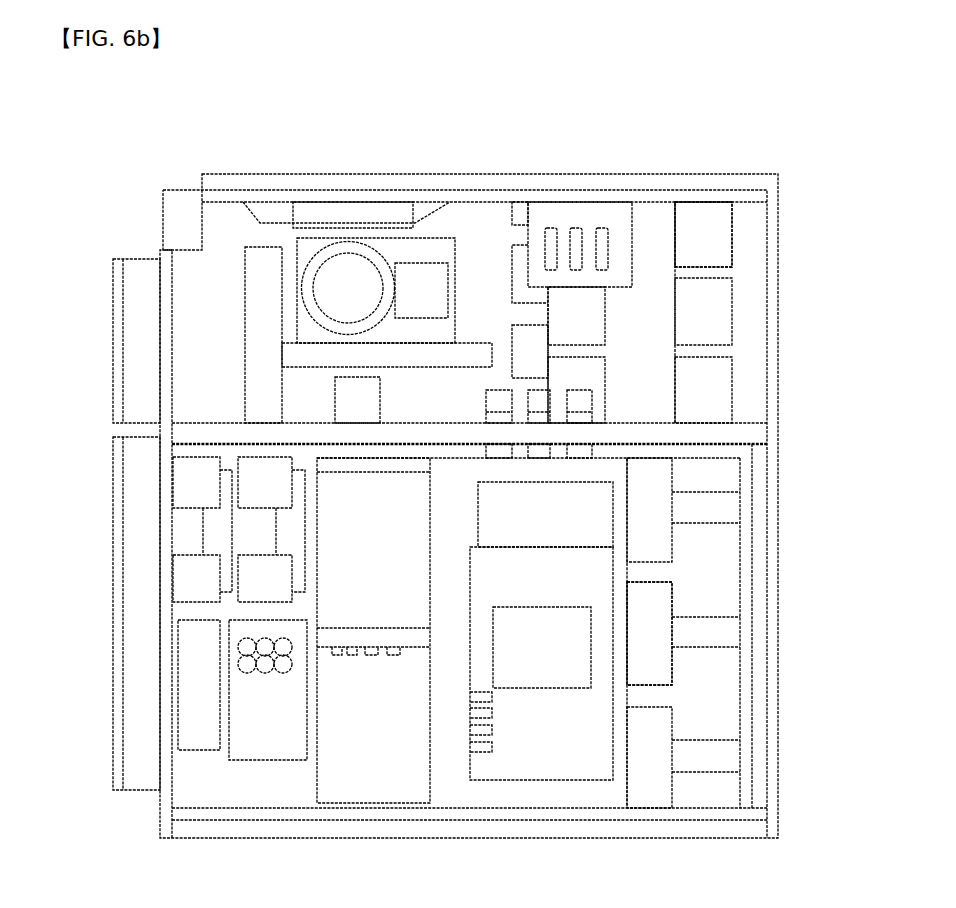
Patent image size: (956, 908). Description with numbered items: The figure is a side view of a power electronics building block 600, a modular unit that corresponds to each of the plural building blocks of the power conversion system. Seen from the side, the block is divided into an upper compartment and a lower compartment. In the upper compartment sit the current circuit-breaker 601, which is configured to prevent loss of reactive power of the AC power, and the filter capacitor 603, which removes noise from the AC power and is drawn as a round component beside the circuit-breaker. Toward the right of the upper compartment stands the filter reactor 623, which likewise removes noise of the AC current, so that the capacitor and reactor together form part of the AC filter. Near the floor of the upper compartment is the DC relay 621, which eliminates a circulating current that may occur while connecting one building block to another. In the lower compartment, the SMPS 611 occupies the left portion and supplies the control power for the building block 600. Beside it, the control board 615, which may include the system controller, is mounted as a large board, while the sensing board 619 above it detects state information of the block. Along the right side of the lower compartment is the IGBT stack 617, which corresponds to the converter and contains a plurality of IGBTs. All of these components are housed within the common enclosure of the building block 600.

The power electronics building block 600 is at (81, 120).
The current circuit-breaker 601 is at (418, 278).
The filter capacitor 603 is at (345, 265).
The SMPS 611 is at (372, 788).
The control board 615 is at (547, 670).
The IGBT stack 617 is at (658, 597).
The sensing board 619 is at (587, 510).
The DC relay 621 is at (348, 398).
The filter reactor 623 is at (704, 213).